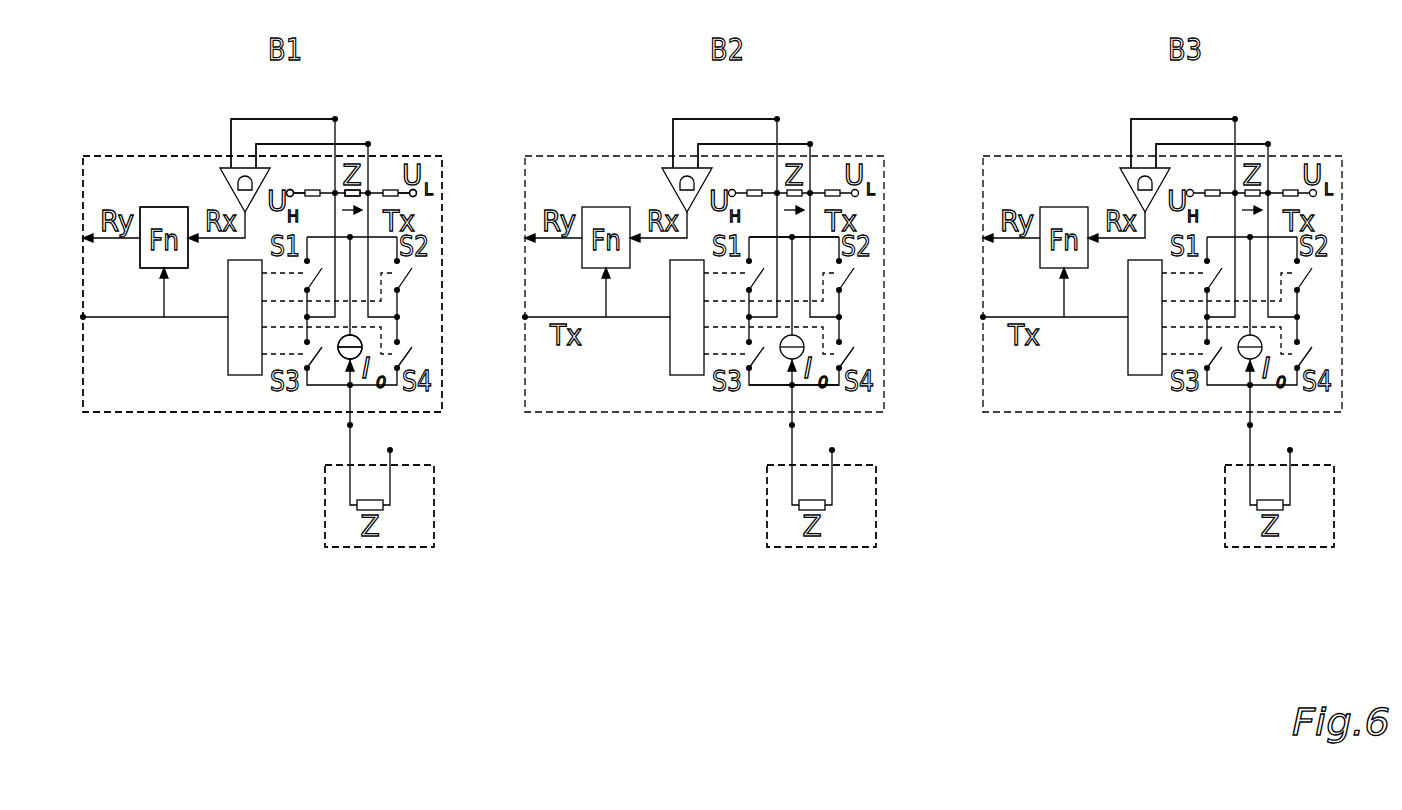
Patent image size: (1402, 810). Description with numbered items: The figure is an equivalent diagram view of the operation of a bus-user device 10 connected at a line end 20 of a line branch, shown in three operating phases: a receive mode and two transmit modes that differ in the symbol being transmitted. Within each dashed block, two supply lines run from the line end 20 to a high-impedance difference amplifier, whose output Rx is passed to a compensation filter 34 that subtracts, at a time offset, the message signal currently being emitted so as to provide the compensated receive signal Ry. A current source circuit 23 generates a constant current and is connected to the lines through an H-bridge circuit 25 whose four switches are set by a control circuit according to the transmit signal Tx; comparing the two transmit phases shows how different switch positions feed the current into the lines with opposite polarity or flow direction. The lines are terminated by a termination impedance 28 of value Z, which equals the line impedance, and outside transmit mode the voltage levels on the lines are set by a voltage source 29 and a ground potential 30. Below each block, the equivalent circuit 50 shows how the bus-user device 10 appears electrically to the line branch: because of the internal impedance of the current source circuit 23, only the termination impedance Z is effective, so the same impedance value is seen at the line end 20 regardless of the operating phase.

The bus-user device 10 is at (442, 297).
The line end 20 is at (335, 119).
The current source circuit 23 is at (341, 358).
The H-bridge circuit 25 is at (742, 402).
The termination impedance 28 is at (368, 193).
The voltage source 29 is at (289, 189).
The ground potential 30 is at (414, 196).
The compensation filter 34 is at (160, 207).
The equivalent circuit 50 is at (380, 547).